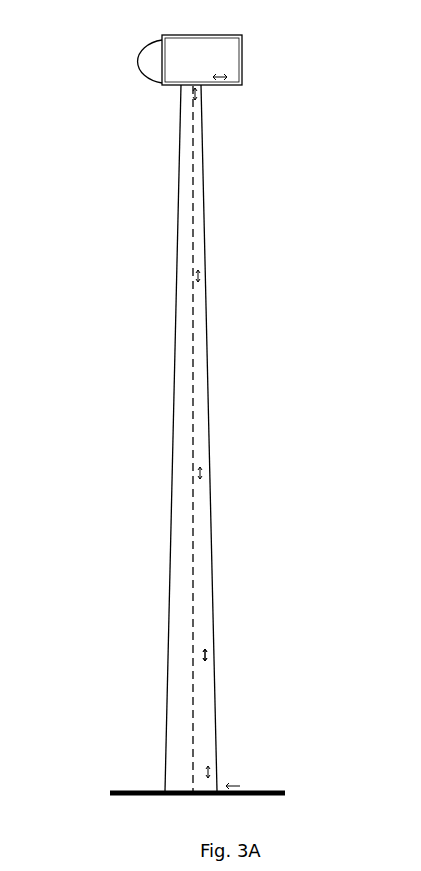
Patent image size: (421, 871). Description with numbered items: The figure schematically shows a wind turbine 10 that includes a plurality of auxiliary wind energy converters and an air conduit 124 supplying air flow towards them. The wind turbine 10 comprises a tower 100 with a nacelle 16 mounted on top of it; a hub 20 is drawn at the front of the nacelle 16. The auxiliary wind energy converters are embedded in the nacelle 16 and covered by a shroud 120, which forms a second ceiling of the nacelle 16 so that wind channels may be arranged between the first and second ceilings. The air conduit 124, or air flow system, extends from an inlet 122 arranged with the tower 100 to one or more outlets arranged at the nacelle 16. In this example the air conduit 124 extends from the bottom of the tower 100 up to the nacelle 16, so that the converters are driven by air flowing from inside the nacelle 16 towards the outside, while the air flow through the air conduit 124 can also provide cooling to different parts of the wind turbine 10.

The wind turbine 10 is at (227, 405).
The nacelle 16 is at (243, 54).
The hub 20 is at (150, 57).
The tower 100 is at (205, 325).
The shroud 120 is at (243, 72).
The inlet 122 is at (221, 789).
The air conduit 124 is at (233, 657).